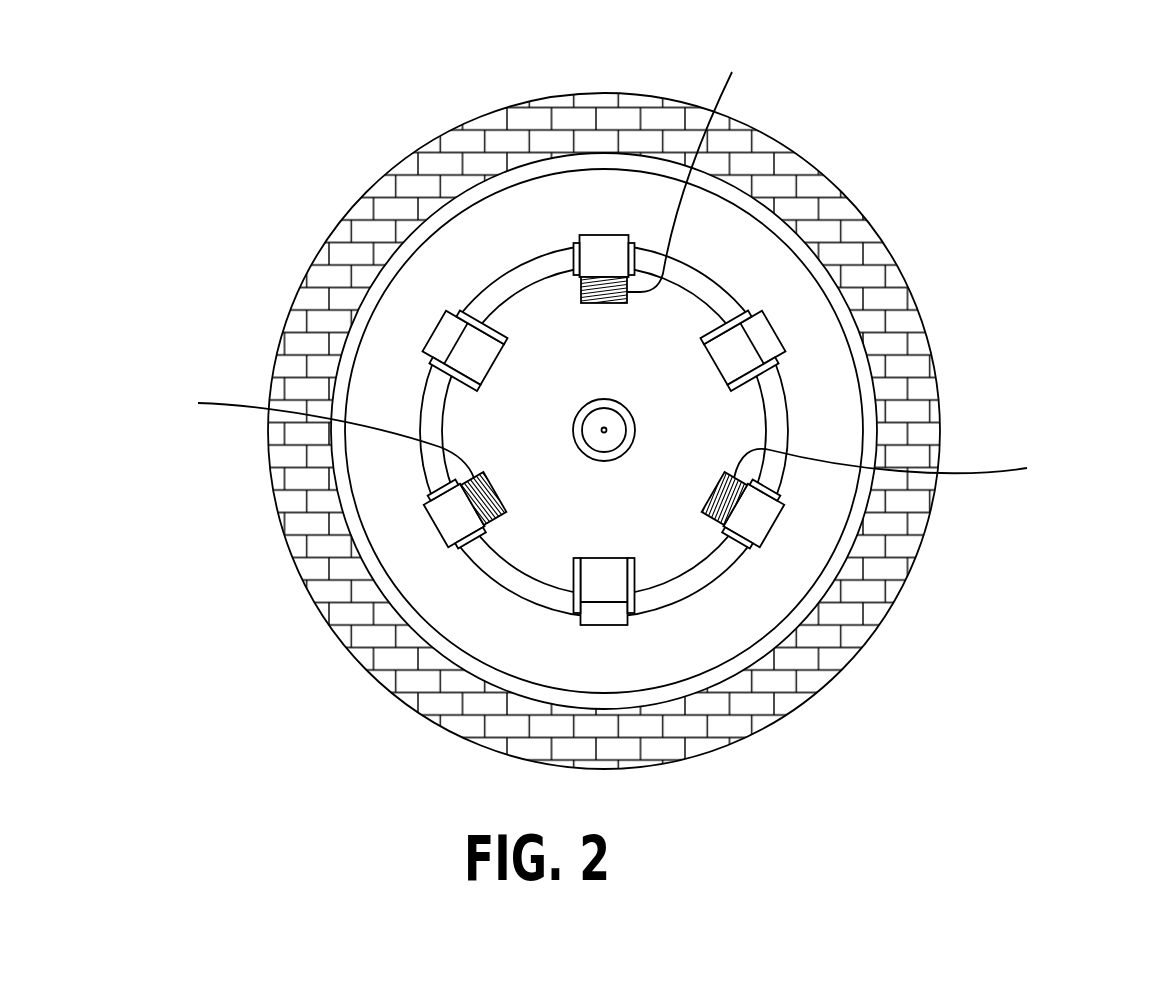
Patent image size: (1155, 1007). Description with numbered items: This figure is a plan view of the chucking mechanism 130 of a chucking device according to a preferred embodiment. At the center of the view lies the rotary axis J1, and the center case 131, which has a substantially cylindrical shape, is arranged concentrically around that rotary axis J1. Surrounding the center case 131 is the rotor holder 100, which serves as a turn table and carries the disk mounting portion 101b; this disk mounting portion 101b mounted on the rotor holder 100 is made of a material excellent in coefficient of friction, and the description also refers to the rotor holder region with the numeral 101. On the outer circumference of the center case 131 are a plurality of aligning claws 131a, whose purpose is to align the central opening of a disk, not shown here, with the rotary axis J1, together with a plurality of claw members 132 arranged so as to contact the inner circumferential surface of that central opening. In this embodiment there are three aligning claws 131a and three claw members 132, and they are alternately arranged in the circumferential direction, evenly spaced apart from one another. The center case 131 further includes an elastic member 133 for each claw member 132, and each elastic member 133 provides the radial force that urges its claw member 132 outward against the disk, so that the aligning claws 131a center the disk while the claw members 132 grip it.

The chucking mechanism 130 is at (233, 61).
The disk mounting portion 101b is at (357, 237).
The housing 101 is at (838, 410).
The rotor holder 100 is at (838, 372).
The center case 131 is at (665, 317).
The aligning claws 131a is at (792, 301).
The claw members 132 is at (567, 221).
The elastic member 133 is at (614, 259).
The rotary axis J1 is at (605, 429).